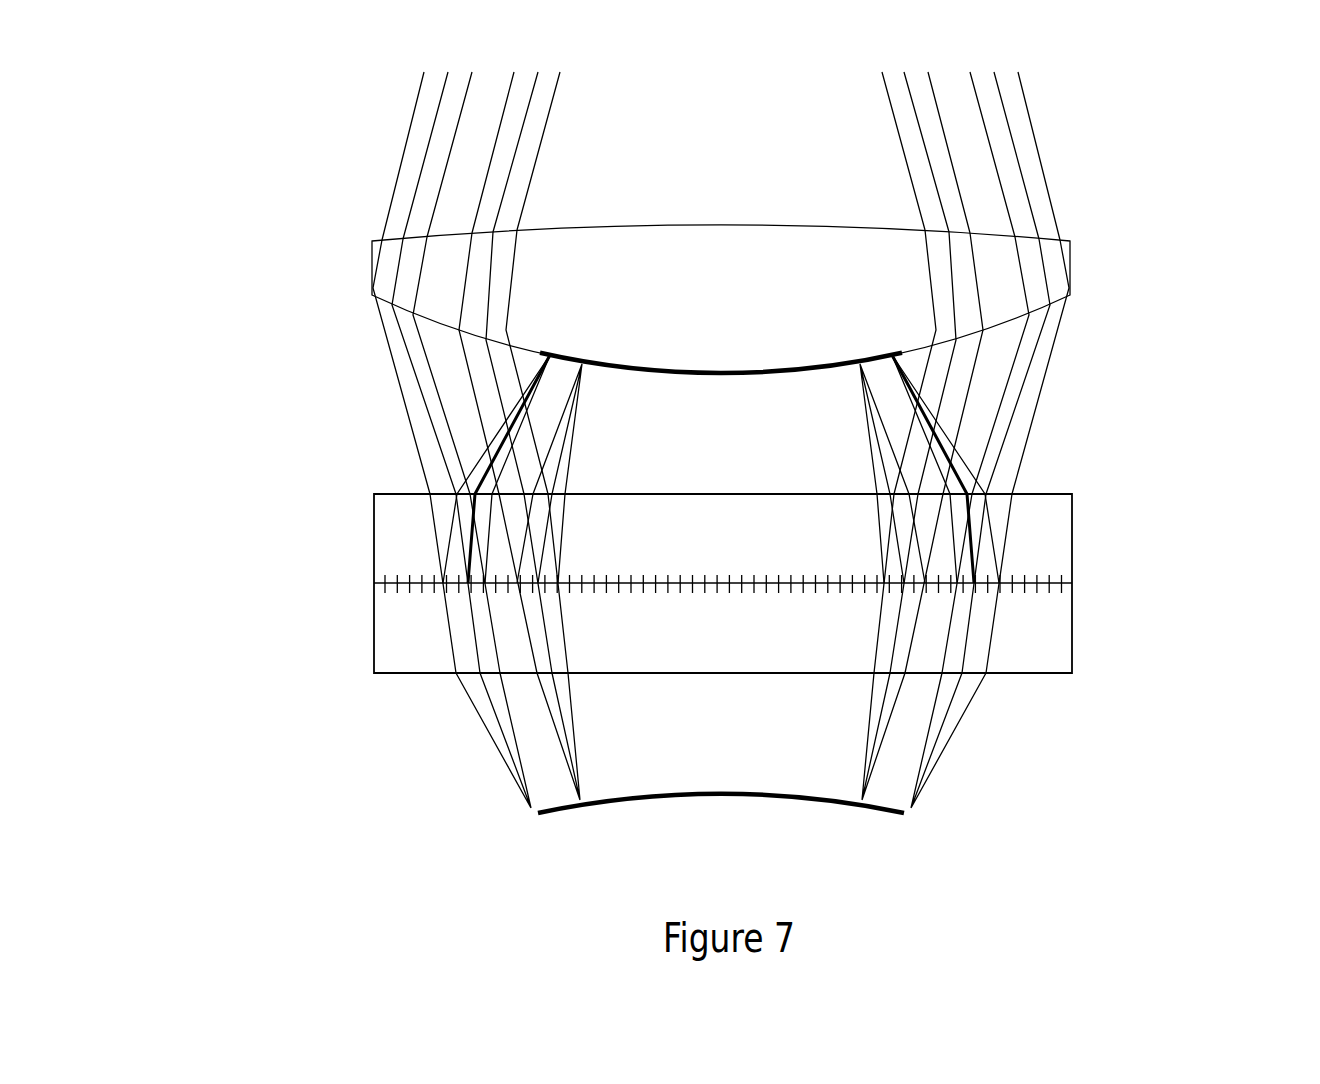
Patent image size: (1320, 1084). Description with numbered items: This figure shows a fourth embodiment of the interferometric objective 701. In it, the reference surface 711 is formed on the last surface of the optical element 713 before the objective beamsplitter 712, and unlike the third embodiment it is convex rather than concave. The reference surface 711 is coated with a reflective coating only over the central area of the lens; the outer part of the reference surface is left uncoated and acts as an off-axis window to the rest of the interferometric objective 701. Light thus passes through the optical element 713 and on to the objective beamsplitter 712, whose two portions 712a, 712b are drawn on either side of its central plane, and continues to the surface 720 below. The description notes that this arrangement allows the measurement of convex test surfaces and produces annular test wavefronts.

The interferometric objective 701 is at (264, 290).
The optical element 713 is at (625, 293).
The reference surface 711 is at (793, 368).
The objective beamsplitter 712 is at (721, 583).
The reticle upper portion 712a is at (382, 538).
The reticle lower portion 712b is at (398, 630).
The curved detector surface 720 is at (640, 800).